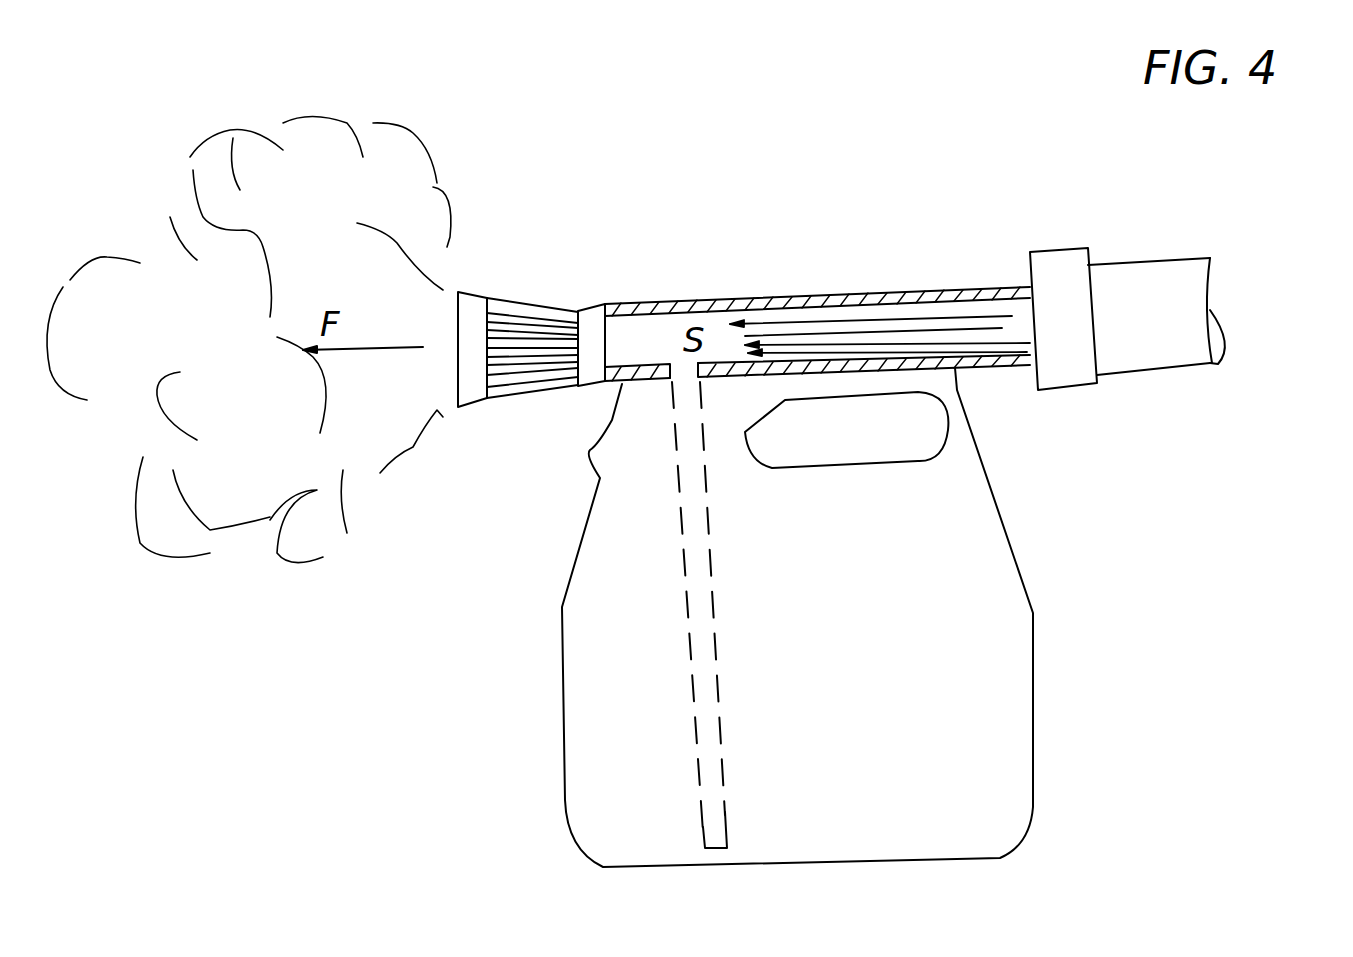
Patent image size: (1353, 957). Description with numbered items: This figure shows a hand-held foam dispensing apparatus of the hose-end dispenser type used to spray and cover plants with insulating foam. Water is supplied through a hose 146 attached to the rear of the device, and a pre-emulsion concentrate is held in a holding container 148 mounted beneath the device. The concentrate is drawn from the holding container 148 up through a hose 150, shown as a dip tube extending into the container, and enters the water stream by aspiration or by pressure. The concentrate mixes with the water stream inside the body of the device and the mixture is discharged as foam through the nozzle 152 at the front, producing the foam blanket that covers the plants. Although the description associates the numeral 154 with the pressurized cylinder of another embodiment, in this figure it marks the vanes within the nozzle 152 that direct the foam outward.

The hose 146 is at (1157, 260).
The holding container 148 is at (1030, 588).
The hose 150 is at (680, 593).
The nozzle 152 is at (470, 287).
The pressurized cylinder 154 is at (512, 313).